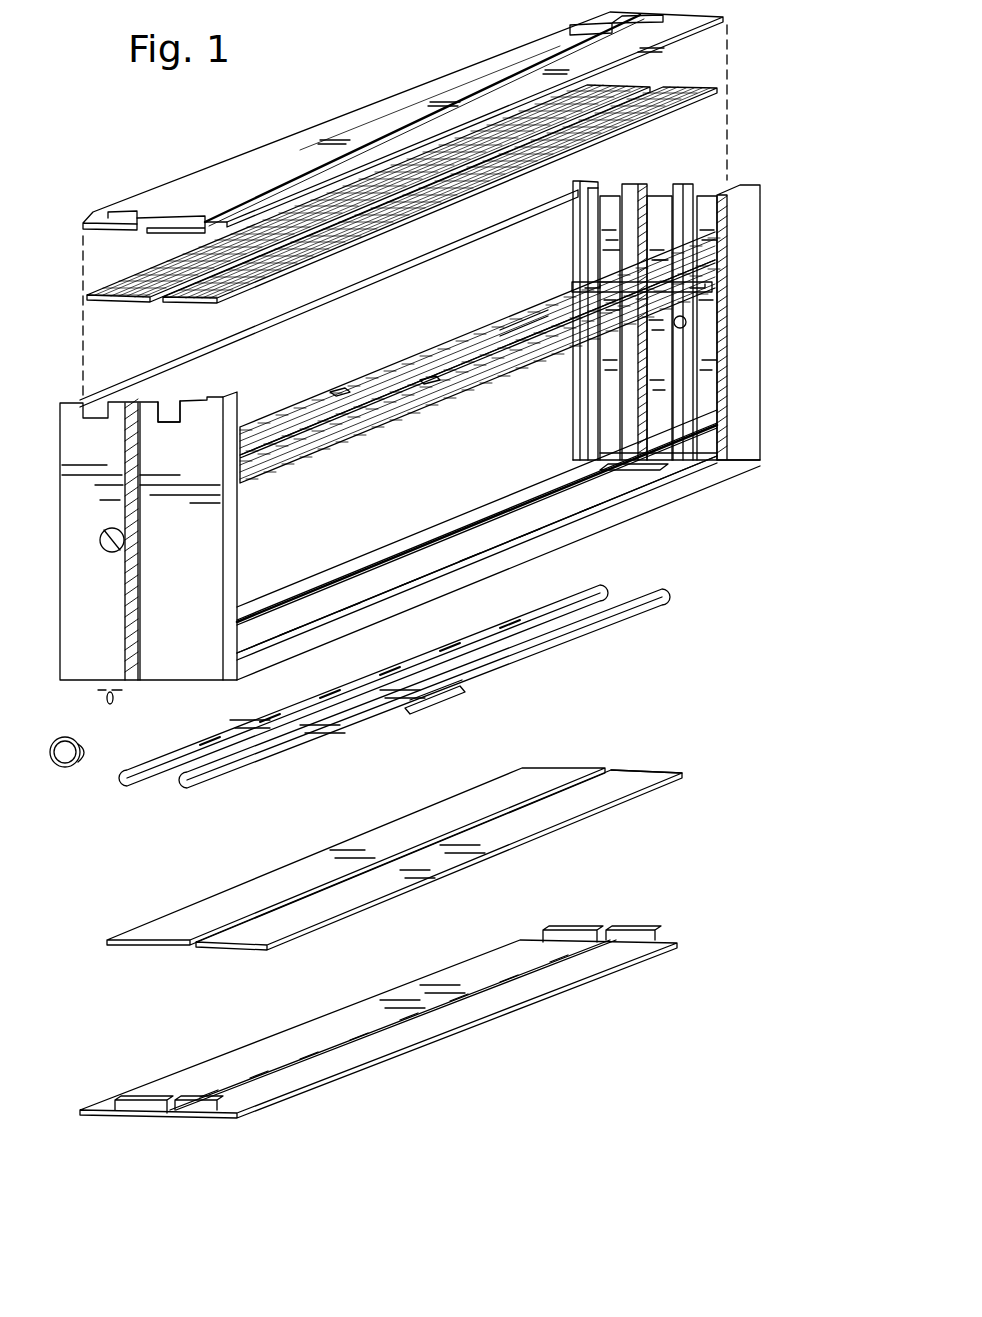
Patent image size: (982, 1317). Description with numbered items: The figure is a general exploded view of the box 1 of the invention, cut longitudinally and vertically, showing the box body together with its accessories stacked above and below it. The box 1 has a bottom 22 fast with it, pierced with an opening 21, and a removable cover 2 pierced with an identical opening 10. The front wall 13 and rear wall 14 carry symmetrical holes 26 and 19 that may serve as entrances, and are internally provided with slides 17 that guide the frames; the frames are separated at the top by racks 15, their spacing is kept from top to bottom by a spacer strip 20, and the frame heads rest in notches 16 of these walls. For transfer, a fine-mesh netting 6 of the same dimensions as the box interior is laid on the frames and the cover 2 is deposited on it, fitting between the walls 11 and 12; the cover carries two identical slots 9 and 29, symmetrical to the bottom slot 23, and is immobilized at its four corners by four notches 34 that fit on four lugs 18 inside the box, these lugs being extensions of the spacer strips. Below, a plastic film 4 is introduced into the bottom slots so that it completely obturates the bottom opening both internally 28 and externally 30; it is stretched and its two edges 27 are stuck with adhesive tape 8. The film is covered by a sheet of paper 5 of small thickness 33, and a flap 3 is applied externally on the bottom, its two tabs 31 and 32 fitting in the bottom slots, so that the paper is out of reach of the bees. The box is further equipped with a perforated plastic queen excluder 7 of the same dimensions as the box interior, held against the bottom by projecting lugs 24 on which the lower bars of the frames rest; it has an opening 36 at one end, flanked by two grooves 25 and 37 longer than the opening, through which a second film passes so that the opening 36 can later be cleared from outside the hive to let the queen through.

The box 1 is at (133, 561).
The removable cover 2 is at (338, 112).
The flap 3 is at (378, 1024).
The plastic film 4 is at (400, 696).
The sheet of paper 5 is at (402, 868).
The netting 6 is at (122, 300).
The queen excluder 7 is at (400, 360).
The adhesive tape 8 is at (425, 704).
The slot 9 is at (140, 208).
The opening 10 is at (373, 135).
The wall 11 is at (398, 246).
The wall 12 is at (727, 345).
The front wall 13 is at (170, 665).
The rear wall 14 is at (654, 302).
The racks 15 is at (172, 402).
The notches 16 is at (665, 196).
The slides 17 is at (610, 229).
The lugs 18 is at (573, 186).
The hole 19 is at (687, 322).
The spacer strip 20 is at (625, 420).
The opening 21 is at (475, 537).
The bottom 22 is at (400, 547).
The slot 23 is at (648, 472).
The projecting lugs 24 is at (445, 388).
The groove 25 is at (495, 345).
The hole 26 is at (110, 553).
The edges 27 is at (445, 700).
The internal obturation 28 is at (620, 600).
The slot 29 is at (575, 28).
The external obturation 30 is at (630, 606).
The tab 31 is at (175, 1105).
The tab 32 is at (630, 938).
The small thickness 33 is at (640, 778).
The notches 34 is at (727, 28).
The opening 36 is at (548, 330).
The groove 37 is at (578, 290).